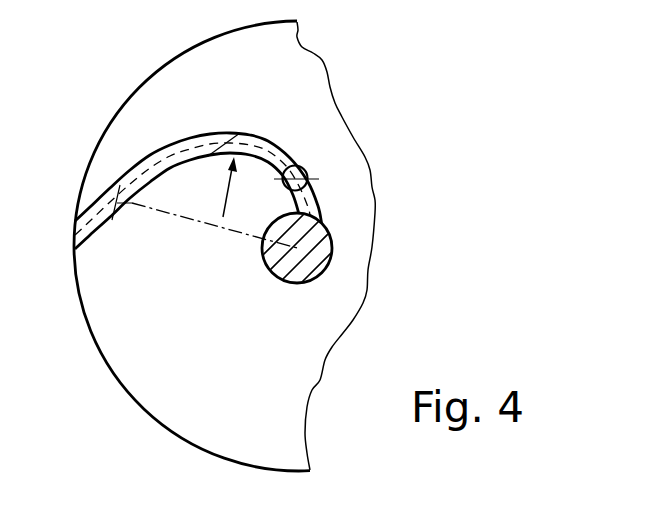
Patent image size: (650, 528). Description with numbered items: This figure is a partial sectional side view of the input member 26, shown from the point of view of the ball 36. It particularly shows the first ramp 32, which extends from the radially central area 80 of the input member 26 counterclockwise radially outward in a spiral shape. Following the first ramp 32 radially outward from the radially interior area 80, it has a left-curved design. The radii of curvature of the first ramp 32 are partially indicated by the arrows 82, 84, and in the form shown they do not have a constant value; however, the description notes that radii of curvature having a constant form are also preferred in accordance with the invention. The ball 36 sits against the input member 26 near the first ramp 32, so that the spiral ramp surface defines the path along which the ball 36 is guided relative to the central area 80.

The input member 26 is at (192, 70).
The first ramp 32 is at (297, 248).
The ball 36 is at (296, 165).
The radially central area 80 is at (359, 175).
The arrow 82 is at (112, 220).
The arrow 84 is at (226, 190).